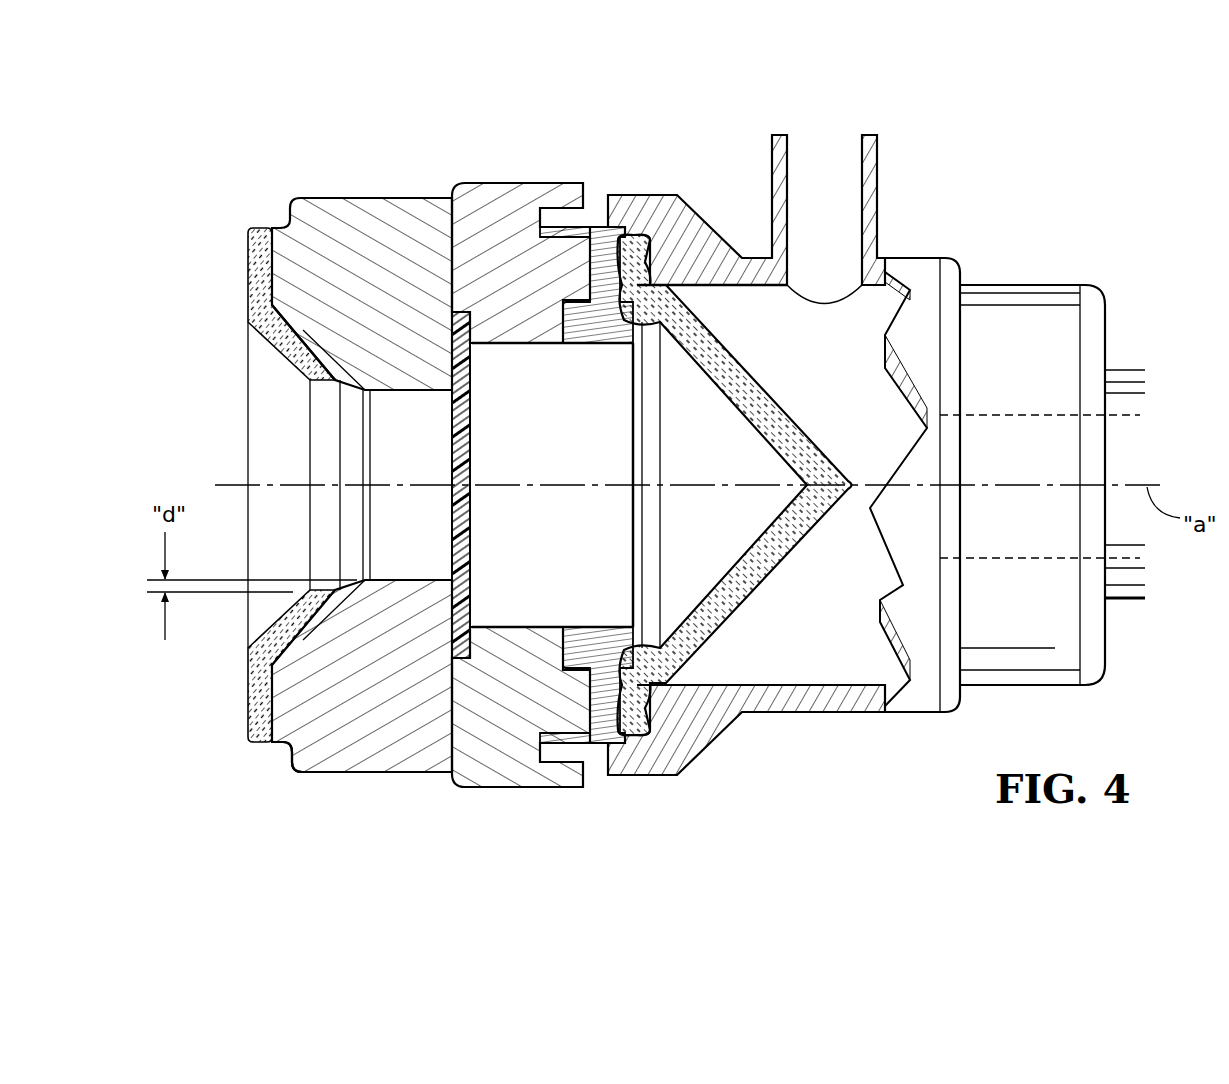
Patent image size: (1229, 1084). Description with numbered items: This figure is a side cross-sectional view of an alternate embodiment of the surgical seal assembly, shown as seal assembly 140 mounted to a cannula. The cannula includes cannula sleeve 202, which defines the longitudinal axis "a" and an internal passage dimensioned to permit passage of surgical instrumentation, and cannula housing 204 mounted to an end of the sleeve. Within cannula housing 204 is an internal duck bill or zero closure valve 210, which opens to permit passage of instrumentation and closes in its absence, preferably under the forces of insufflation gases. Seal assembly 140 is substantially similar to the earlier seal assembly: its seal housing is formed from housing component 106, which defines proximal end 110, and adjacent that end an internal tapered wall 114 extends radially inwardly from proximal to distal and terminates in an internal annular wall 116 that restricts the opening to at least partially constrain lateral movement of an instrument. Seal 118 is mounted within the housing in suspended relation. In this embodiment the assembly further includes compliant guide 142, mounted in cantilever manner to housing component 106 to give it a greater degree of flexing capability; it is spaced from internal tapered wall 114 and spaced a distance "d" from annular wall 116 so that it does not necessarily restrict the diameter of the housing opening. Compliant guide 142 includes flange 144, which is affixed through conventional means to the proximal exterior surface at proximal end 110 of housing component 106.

The housing component 106 is at (330, 743).
The proximal end 110 is at (290, 764).
The internal tapered wall 114 is at (297, 333).
The internal annular wall 116 is at (420, 394).
The seal 118 is at (467, 556).
The seal assembly 140 is at (403, 783).
The compliant guide 142 is at (246, 669).
The flange 144 is at (248, 273).
The cannula sleeve 202 is at (1127, 400).
The cannula housing 204 is at (747, 718).
The zero closure valve 210 is at (703, 332).